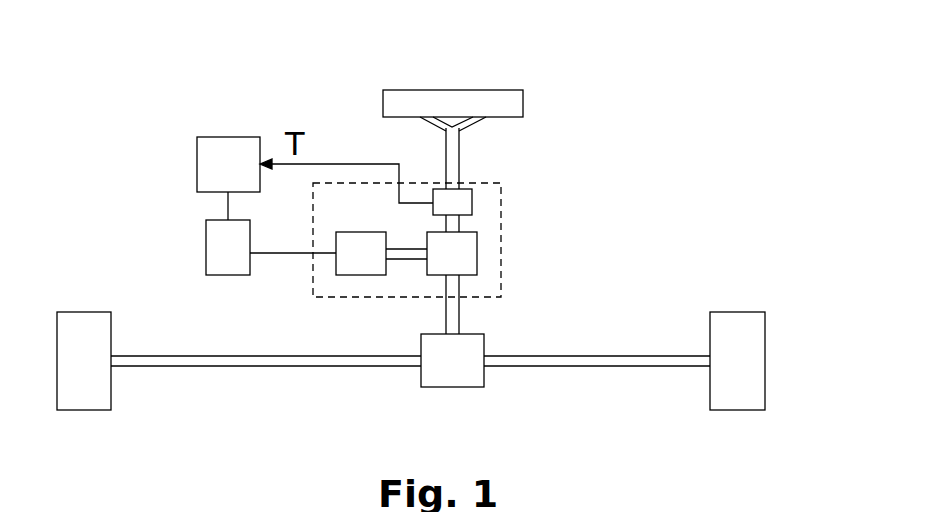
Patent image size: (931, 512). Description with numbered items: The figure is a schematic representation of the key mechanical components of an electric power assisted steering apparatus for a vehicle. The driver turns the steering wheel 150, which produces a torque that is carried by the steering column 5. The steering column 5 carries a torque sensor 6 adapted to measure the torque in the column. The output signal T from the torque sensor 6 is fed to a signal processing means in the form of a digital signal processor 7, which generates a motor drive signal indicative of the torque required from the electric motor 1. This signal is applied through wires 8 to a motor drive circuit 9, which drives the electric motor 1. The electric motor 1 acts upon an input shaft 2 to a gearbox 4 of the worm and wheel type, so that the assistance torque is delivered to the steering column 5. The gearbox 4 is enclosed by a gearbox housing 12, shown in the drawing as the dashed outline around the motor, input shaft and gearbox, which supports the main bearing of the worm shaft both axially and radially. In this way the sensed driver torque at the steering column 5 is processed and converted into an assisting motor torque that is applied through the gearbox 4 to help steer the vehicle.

The steering wheel 150 is at (502, 97).
The steering column 5 is at (556, 255).
The torque sensor 6 is at (463, 205).
The gearbox 4 is at (465, 243).
The electric motor 1 is at (350, 275).
The input shaft 2 is at (410, 250).
The gearbox housing 12 is at (503, 282).
The digital signal processor 7 is at (217, 137).
The wires 8 is at (222, 208).
The motor drive circuit 9 is at (212, 243).